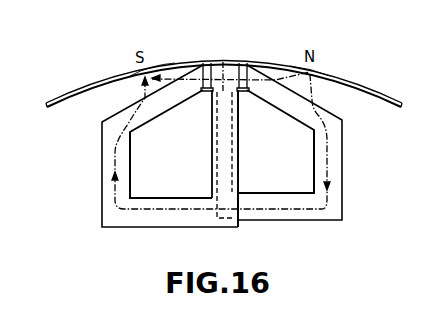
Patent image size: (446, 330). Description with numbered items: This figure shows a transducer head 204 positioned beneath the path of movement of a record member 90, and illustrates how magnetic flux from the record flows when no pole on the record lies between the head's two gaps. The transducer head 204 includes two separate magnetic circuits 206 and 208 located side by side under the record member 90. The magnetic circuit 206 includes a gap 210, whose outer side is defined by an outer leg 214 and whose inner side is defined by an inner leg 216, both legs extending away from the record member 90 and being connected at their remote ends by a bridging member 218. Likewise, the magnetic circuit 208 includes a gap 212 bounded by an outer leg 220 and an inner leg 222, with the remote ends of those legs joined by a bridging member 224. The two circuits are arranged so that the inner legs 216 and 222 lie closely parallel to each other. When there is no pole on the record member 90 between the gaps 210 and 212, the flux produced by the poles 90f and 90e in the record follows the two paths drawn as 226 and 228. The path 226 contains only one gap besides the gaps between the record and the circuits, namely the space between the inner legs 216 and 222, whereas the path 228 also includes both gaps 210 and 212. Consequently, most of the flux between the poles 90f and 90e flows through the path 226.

The record member 90 is at (67, 96).
The pole on the record member 90e is at (143, 70).
The pole on the record member 90f is at (311, 70).
The transducer head 204 is at (214, 165).
The magnetic circuit 206 is at (146, 165).
The magnetic circuit 208 is at (307, 164).
The gap 210 is at (208, 90).
The gap 212 is at (243, 90).
The outer leg 214 is at (103, 160).
The inner leg 216 is at (212, 151).
The bridging member 218 is at (171, 144).
The outer leg 220 is at (342, 152).
The inner leg 222 is at (233, 147).
The bridging member 224 is at (270, 193).
The flux path 226 is at (333, 203).
The flux path 228 is at (224, 78).